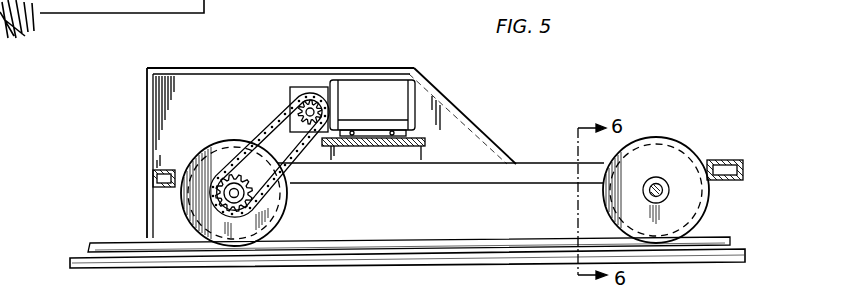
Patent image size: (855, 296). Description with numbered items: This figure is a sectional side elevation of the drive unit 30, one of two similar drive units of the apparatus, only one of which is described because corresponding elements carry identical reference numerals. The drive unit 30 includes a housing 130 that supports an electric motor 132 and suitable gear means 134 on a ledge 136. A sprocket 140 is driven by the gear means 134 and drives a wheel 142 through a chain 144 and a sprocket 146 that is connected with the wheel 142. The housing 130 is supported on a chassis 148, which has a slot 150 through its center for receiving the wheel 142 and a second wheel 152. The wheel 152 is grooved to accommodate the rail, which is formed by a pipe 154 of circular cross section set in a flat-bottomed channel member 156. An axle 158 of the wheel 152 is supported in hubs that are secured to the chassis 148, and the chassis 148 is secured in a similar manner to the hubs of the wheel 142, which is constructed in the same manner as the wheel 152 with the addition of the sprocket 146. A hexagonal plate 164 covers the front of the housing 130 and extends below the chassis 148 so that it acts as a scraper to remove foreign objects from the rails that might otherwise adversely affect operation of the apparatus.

The drive unit 30 is at (452, 106).
The housing 130 is at (218, 68).
The electric motor 132 is at (376, 80).
The gear means 134 is at (305, 87).
The ledge 136 is at (427, 143).
The sprocket 140 is at (278, 120).
The wheel 142 is at (283, 222).
The chain 144 is at (300, 150).
The sprocket 146 is at (243, 145).
The chassis 148 is at (400, 184).
The slot 150 is at (708, 160).
The wheel 152 is at (655, 136).
The pipe 154 is at (123, 244).
The channel member 156 is at (72, 263).
The axle 158 is at (668, 192).
The hexagonal plate 164 is at (147, 119).